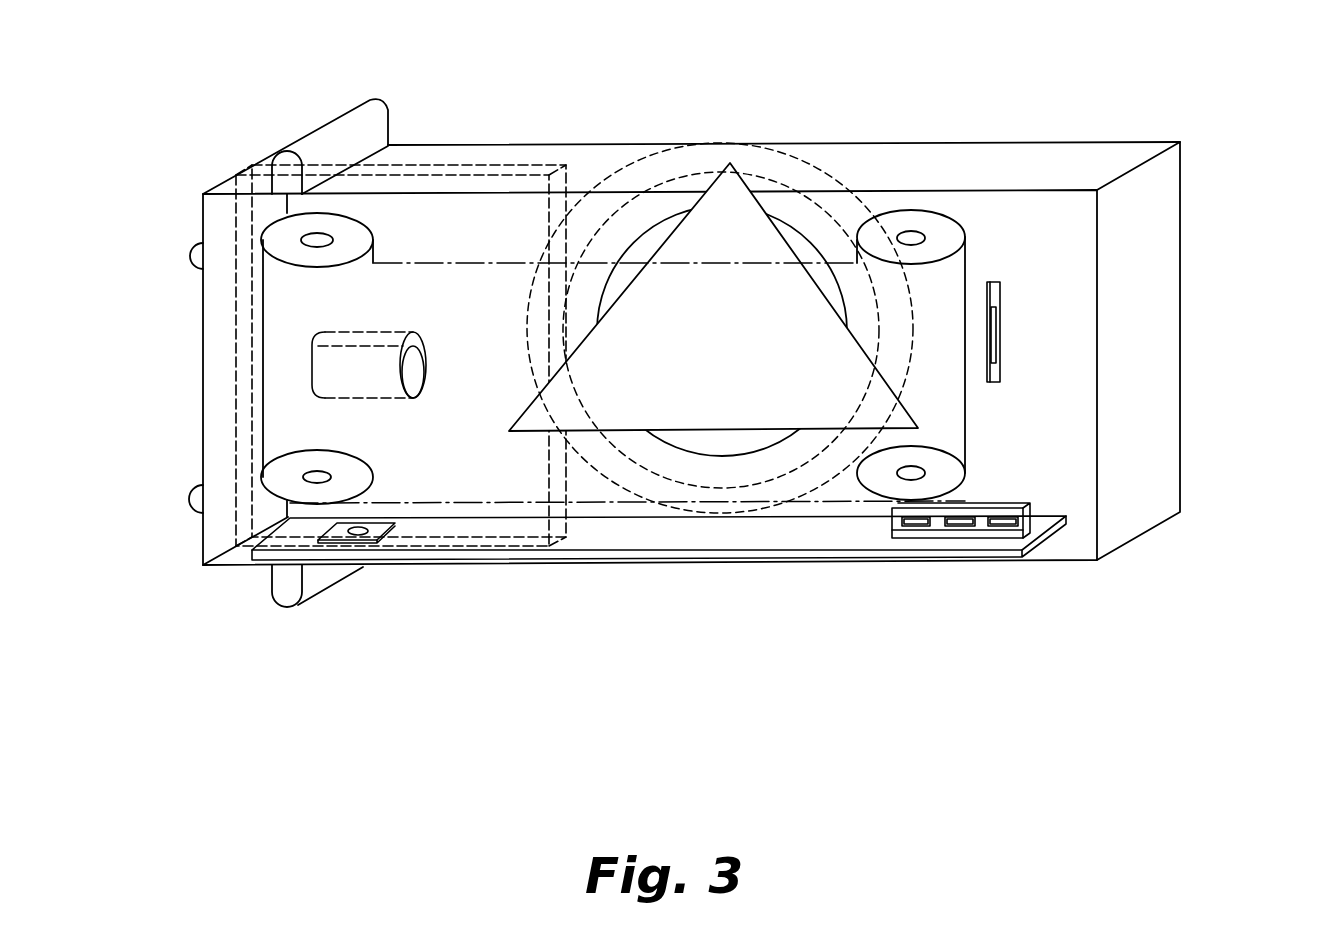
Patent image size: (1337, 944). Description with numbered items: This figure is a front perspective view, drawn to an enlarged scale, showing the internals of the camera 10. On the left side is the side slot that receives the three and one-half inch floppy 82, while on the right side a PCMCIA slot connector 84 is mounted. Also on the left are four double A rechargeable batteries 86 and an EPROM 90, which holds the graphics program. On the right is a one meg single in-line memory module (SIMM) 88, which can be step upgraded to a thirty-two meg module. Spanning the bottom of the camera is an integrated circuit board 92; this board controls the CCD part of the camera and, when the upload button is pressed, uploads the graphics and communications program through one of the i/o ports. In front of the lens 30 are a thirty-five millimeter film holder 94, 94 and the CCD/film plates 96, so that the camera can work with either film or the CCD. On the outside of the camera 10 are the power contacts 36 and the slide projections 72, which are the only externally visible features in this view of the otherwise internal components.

The camera 10 is at (995, 143).
The lens 30 is at (655, 223).
The power contacts 36 is at (188, 256).
The slide projections 72 is at (337, 118).
The 3.5 inch floppy 82 is at (482, 168).
The PCMCIA slot connector 84 is at (1000, 293).
The double A rechargeable batteries 86 is at (312, 380).
The single in-line memory module 88 is at (1000, 505).
The EPROM 90 is at (350, 541).
The integrated circuit board 92 is at (800, 558).
The 35 mm film holder 94 is at (290, 262).
The CCD/film plates 96 is at (782, 237).